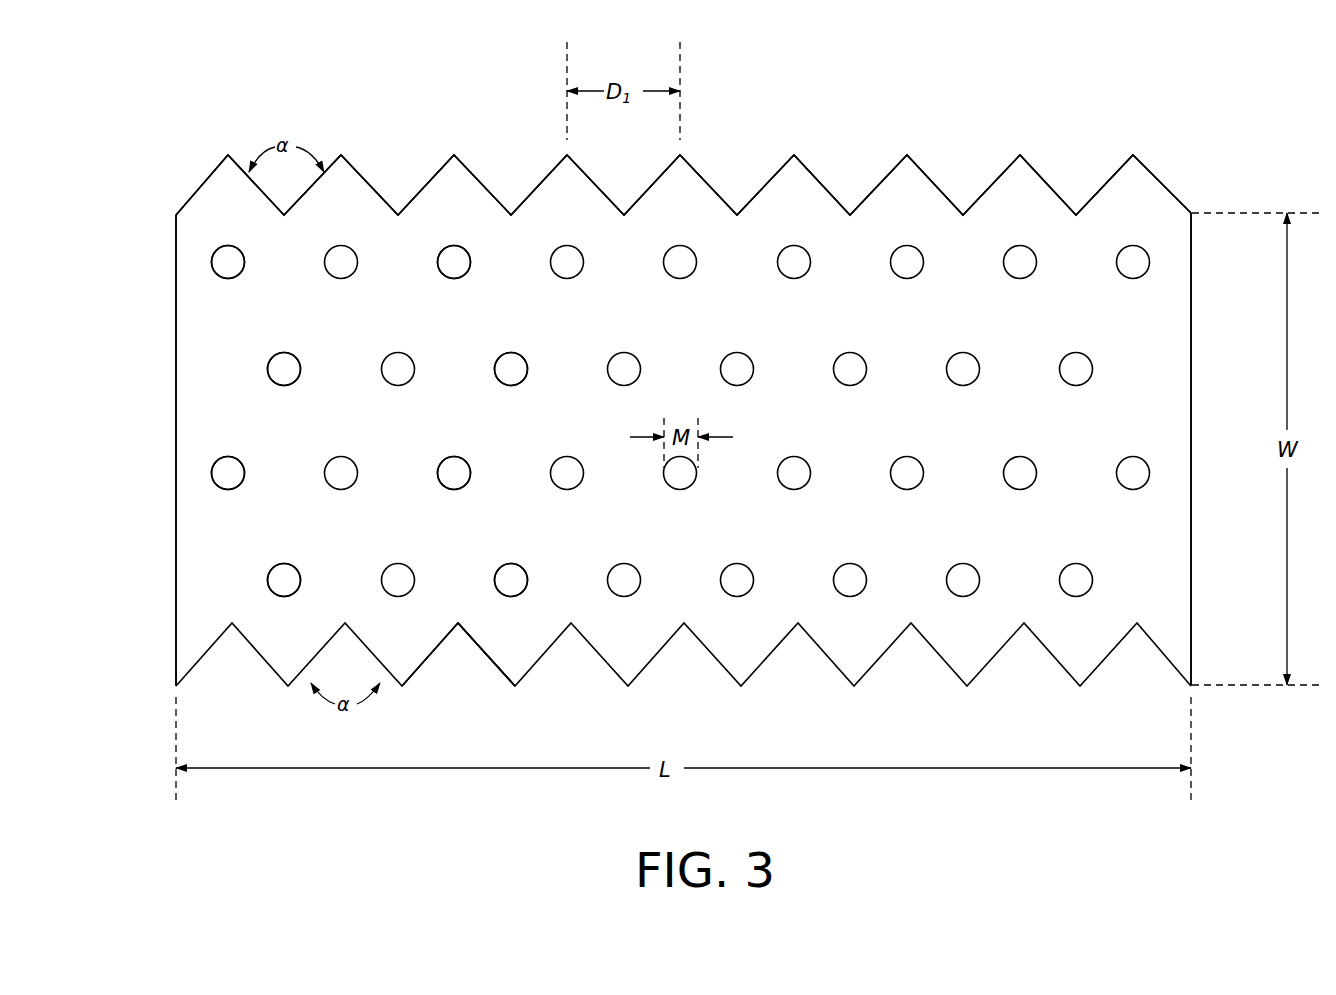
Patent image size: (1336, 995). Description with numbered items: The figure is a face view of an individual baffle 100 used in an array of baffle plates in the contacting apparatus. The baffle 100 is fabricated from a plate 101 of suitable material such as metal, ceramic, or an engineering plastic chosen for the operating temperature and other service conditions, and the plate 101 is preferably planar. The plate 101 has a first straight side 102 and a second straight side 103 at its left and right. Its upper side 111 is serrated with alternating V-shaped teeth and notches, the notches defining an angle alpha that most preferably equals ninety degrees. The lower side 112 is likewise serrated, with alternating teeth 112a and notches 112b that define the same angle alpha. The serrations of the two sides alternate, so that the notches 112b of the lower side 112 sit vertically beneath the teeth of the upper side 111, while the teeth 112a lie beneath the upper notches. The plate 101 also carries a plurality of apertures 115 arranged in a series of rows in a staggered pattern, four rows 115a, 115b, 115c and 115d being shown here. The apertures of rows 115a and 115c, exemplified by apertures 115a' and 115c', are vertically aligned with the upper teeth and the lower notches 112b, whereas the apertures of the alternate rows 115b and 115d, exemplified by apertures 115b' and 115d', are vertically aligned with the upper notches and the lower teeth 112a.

The baffle 100 is at (873, 120).
The plate 101 is at (1153, 356).
The first straight side 102 is at (176, 229).
The second straight side 103 is at (1191, 280).
The upper side 111 is at (1176, 179).
The lower side 112 is at (1040, 684).
The teeth 112a is at (518, 648).
The notches 112b is at (459, 628).
The apertures 115 is at (1038, 482).
The row of apertures 115a is at (165, 267).
The row of apertures 115b is at (193, 369).
The row of apertures 115c is at (165, 476).
The row of apertures 115d is at (193, 580).
The aperture 115a' is at (407, 286).
The aperture 115b' is at (554, 343).
The aperture 115c' is at (498, 448).
The aperture 115d' is at (556, 555).